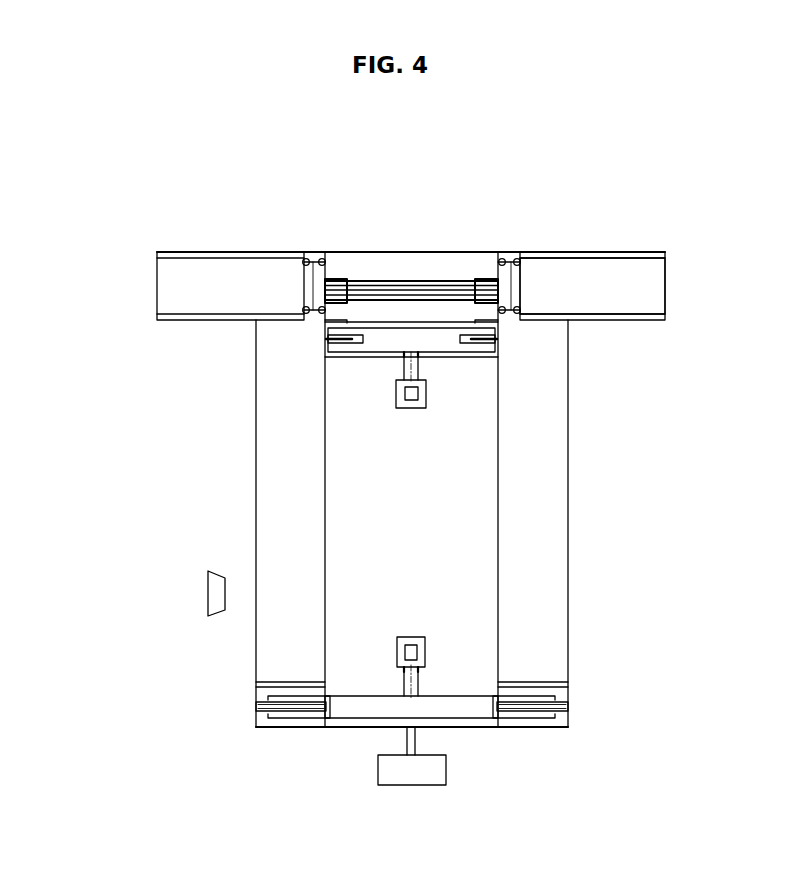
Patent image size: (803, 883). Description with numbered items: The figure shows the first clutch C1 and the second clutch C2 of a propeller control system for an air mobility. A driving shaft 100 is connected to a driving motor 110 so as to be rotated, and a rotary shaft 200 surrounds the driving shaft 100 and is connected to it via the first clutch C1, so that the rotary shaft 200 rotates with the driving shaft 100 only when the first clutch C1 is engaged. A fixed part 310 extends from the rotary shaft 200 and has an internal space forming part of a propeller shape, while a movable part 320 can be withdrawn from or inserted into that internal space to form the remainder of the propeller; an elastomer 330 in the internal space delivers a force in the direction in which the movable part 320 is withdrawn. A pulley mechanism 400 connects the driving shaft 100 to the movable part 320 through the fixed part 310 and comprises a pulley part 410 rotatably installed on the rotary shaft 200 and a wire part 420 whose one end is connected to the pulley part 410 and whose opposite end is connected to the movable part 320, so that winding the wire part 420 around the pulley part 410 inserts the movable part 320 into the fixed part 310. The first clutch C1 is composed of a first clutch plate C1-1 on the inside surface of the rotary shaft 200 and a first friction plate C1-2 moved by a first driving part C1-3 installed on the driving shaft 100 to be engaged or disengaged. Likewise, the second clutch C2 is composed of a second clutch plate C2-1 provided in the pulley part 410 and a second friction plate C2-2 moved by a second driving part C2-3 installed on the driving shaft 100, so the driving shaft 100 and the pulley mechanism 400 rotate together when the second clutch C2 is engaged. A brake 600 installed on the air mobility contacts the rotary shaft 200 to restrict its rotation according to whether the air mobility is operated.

The driving shaft 100 is at (447, 516).
The driving motor 110 is at (411, 773).
The rotary shaft 200 is at (546, 422).
The fixed part 310 is at (612, 252).
The movable part 320 is at (645, 288).
The elastomer 330 is at (312, 252).
The pulley mechanism 400 is at (412, 228).
The pulley part 410 is at (408, 266).
The wire part 420 is at (460, 280).
The brake 600 is at (215, 594).
The first clutch C1 is at (502, 678).
The first clutch plate C1-1 is at (534, 685).
The first friction plate C1-2 is at (469, 712).
The first driving part C1-3 is at (413, 652).
The second clutch C2 is at (251, 383).
The second clutch plate C2-1 is at (343, 340).
The second friction plate C2-2 is at (407, 327).
The second driving part C2-3 is at (411, 396).